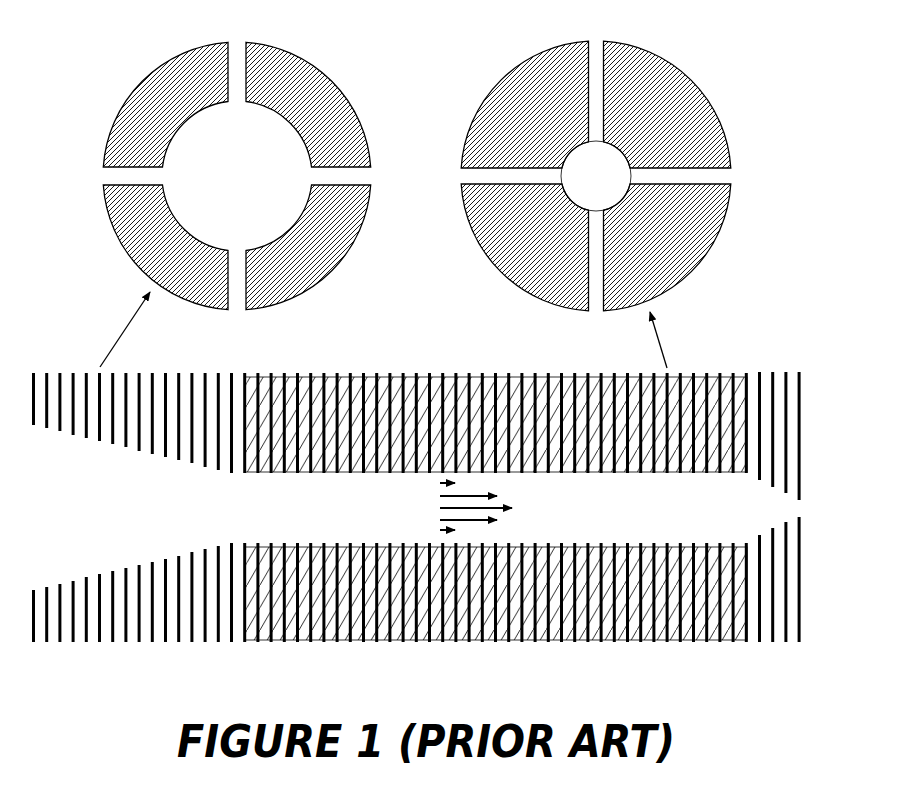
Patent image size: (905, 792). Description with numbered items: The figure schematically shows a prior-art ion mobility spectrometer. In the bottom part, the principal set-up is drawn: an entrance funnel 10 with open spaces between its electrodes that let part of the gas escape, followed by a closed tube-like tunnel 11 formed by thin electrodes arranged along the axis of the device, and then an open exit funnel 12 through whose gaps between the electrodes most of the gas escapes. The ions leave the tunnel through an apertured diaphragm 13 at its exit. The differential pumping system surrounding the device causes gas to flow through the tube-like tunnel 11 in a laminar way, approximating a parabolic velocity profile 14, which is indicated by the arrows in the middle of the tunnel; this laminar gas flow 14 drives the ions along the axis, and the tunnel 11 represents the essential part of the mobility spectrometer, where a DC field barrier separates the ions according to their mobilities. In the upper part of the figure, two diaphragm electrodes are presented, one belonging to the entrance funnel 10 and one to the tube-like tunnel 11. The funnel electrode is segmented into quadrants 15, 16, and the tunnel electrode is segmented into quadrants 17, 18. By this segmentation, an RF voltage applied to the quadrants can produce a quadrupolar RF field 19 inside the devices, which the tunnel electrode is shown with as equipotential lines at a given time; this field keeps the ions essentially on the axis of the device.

The entrance funnel 10 is at (33, 361).
The tube-like quadrupole tunnel 11 is at (248, 361).
The exit funnel 12 is at (752, 361).
The apertured diaphragm 13 is at (800, 369).
The laminar gas flow with parabolic velocity profile 14 is at (459, 506).
The quadrant electrodes of the entrance funnel 15 is at (236, 175).
The quadrant electrodes of the entrance funnel 16 is at (236, 175).
The quadrant electrodes of the quadrupole tunnel 17 is at (596, 176).
The quadrant electrodes of the quadrupole tunnel 18 is at (596, 176).
The quadrupolar RF field 19 is at (596, 176).